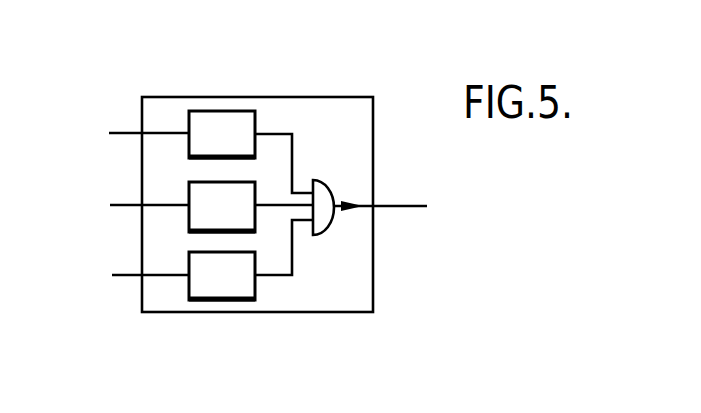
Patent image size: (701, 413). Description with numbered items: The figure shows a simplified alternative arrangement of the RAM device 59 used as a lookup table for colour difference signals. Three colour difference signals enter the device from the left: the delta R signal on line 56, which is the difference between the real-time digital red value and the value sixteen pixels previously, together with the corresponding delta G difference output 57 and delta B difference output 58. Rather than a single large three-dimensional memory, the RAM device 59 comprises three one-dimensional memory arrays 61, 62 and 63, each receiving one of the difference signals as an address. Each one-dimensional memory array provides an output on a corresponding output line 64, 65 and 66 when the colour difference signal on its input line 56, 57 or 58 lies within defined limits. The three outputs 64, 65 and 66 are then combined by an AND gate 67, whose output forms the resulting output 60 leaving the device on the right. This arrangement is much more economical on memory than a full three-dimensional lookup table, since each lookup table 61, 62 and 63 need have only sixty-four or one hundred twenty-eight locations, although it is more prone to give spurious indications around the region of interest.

The difference signal delta R 56 is at (120, 133).
The difference output delta G 57 is at (120, 205).
The difference output delta B 58 is at (121, 275).
The RAM device 59 is at (373, 147).
The resulting output 60 is at (412, 210).
The first one-dimensional memory array 61 is at (223, 122).
The second one-dimensional memory array 62 is at (200, 213).
The third one-dimensional memory array 63 is at (227, 288).
The first output line 64 is at (296, 135).
The second output line 65 is at (275, 206).
The third output line 66 is at (291, 270).
The AND gate 67 is at (328, 190).